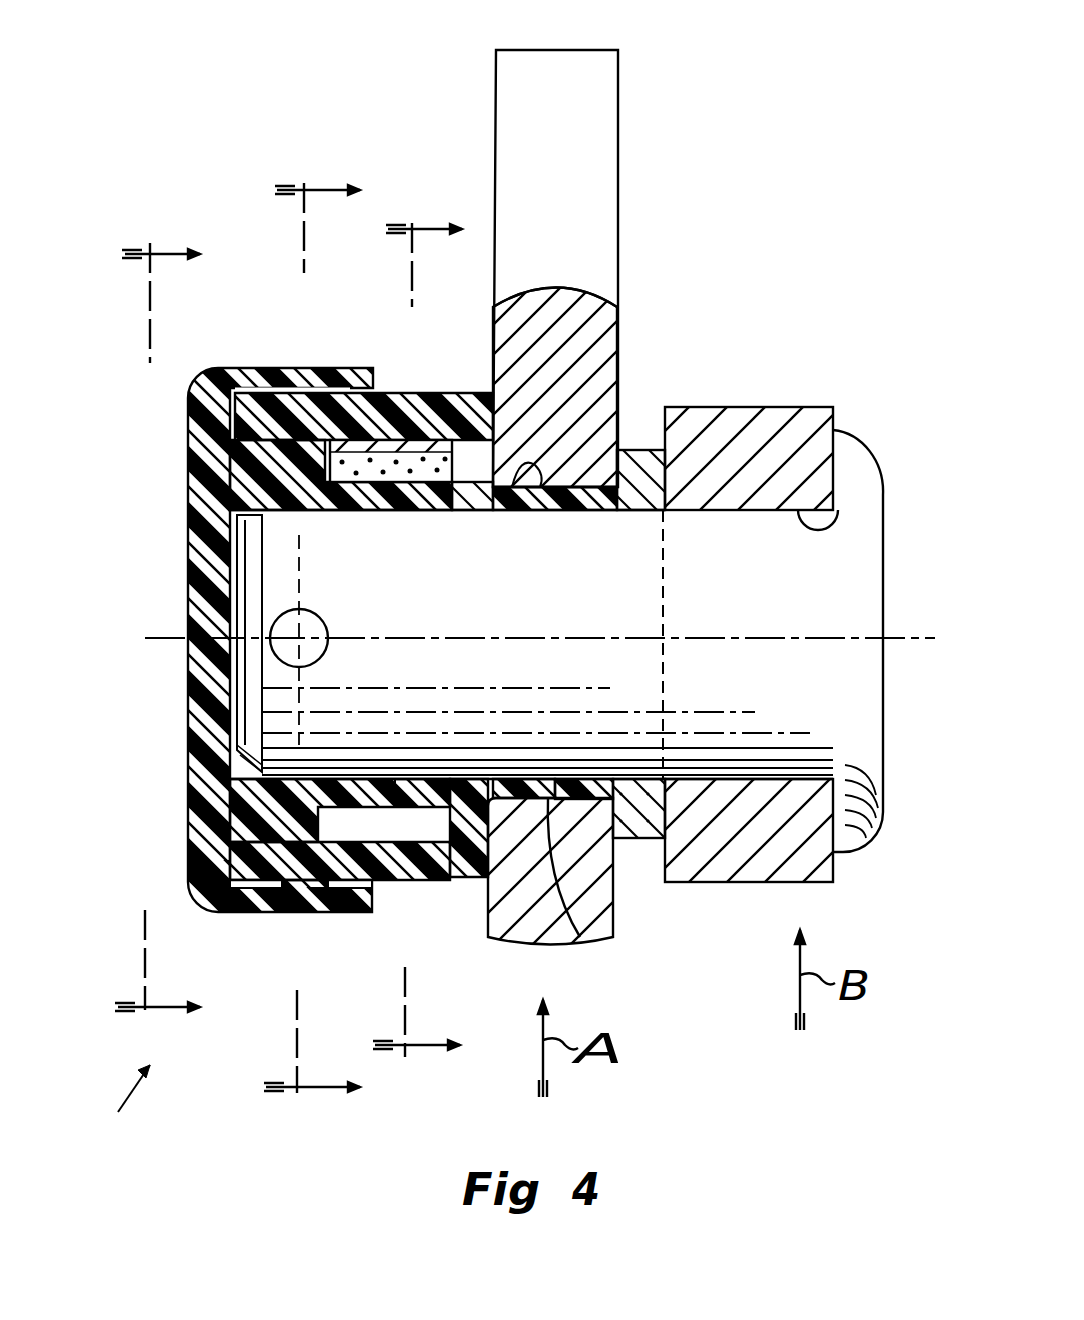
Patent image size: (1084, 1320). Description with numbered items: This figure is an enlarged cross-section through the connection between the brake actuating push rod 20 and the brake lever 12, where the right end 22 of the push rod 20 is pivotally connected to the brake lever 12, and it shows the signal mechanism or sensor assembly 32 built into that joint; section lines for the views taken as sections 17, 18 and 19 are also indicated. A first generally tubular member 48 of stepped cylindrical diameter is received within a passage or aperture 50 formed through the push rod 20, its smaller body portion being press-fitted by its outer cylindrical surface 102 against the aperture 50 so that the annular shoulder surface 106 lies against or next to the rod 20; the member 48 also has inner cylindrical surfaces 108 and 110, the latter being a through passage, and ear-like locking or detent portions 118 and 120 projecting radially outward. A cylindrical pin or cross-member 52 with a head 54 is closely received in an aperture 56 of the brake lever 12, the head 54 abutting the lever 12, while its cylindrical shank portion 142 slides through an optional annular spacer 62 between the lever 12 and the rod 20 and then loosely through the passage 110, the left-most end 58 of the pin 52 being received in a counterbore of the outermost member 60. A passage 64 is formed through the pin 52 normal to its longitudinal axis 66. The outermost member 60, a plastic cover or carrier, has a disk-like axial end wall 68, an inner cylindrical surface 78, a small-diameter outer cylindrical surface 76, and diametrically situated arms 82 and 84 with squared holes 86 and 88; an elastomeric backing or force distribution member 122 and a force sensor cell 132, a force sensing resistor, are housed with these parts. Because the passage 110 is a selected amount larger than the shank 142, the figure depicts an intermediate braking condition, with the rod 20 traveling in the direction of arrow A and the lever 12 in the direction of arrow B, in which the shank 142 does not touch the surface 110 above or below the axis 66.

The brake lever 12 is at (740, 405).
The push rod 20 is at (603, 175).
The right end of push rod 22 is at (512, 942).
The sensor assembly 32 is at (119, 1111).
The first generally tubular member 48 is at (447, 880).
The passage or aperture 50 is at (520, 797).
The cylindrical pin or cross-member 52 is at (768, 528).
The head 54 is at (862, 440).
The passage or aperture 56 is at (862, 505).
The left-most end of pin 58 is at (287, 720).
The outermost member 60 is at (188, 806).
The annular spacer 62 is at (636, 840).
The passage 64 is at (310, 625).
The longitudinal axis 66 is at (780, 637).
The axial end wall 68 is at (205, 585).
The outer cylindrical surface 76 is at (360, 815).
The inner cylindrical surface 78 is at (375, 512).
The arm 82 is at (350, 372).
The arm 84 is at (345, 912).
The squared hole or passage 86 is at (293, 368).
The squared hole or passage 88 is at (310, 912).
The outer cylindrical surface 102 is at (575, 940).
The annular shoulder surface 106 is at (535, 355).
The inner cylindrical surface 108 is at (395, 800).
The inner cylindrical surface 110 is at (590, 500).
The locking or detent portion 118 is at (325, 372).
The locking or detent portion 120 is at (300, 913).
The backing member 122 is at (440, 470).
The force sensor cell 132 is at (410, 440).
The cylindrical shank portion 142 is at (532, 488).
The section line 17- 17 is at (426, 636).
The section line 18- 18 is at (319, 636).
The section line 19- 19 is at (162, 629).